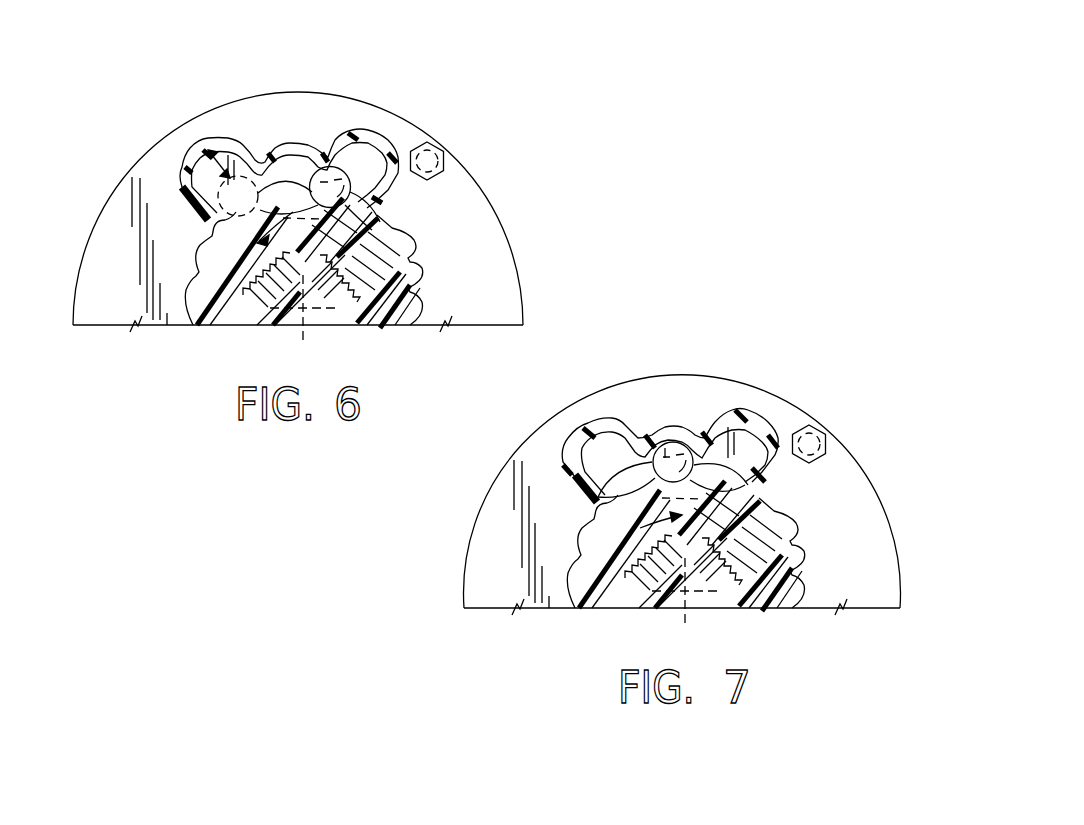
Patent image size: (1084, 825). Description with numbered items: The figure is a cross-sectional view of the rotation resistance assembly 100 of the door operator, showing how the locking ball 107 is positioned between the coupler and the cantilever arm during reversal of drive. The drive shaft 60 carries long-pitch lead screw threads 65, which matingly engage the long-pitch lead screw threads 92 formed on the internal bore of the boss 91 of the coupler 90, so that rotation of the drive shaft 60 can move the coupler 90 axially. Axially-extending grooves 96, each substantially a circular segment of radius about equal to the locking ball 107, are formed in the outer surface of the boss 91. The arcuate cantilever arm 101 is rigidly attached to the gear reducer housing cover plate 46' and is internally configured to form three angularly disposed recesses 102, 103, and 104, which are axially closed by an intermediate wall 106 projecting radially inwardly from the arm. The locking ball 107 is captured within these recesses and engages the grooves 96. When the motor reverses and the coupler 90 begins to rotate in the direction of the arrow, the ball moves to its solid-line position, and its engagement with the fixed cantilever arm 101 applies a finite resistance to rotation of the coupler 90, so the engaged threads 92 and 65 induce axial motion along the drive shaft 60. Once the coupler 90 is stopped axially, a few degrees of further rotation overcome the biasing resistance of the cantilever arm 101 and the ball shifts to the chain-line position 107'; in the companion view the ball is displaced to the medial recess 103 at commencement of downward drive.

In FIG. 6, the cover plate 46' is at (102, 243).
In FIG. 7, the cover plate 46' is at (463, 534).
In FIG. 6, the drive shaft 60 is at (263, 329).
In FIG. 7, the drive shaft 60 is at (645, 613).
In FIG. 6, the long-pitch lead screw threads 65 is at (357, 267).
In FIG. 7, the long-pitch lead screw threads 65 is at (737, 550).
In FIG. 6, the coupler 90 is at (379, 321).
In FIG. 7, the coupler 90 is at (761, 606).
In FIG. 6, the boss 91 is at (222, 313).
In FIG. 7, the boss 91 is at (600, 590).
In FIG. 6, the long-pitch lead screw threads 92 is at (303, 316).
In FIG. 7, the long-pitch lead screw threads 92 is at (727, 578).
In FIG. 6, the axially-extending grooves 96 is at (413, 282).
In FIG. 7, the axially-extending grooves 96 is at (790, 577).
In FIG. 6, the rotation resistance assembly 100 is at (272, 126).
In FIG. 7, the rotation resistance assembly 100 is at (712, 403).
In FIG. 6, the arcuate cantilever arm 101 is at (362, 138).
In FIG. 7, the arcuate cantilever arm 101 is at (752, 433).
In FIG. 6, the recess 102 is at (366, 158).
In FIG. 7, the recess 102 is at (748, 437).
In FIG. 6, the recess 103 is at (293, 145).
In FIG. 7, the recess 103 is at (655, 433).
In FIG. 6, the recess 104 is at (217, 160).
In FIG. 7, the recess 104 is at (598, 440).
In FIG. 6, the intermediate wall 106 is at (363, 183).
In FIG. 7, the intermediate wall 106 is at (600, 476).
In FIG. 6, the locking ball 107 is at (339, 136).
In FIG. 7, the locking ball 107 is at (676, 395).
In FIG. 6, the chain-line position of locking ball 107' is at (172, 161).